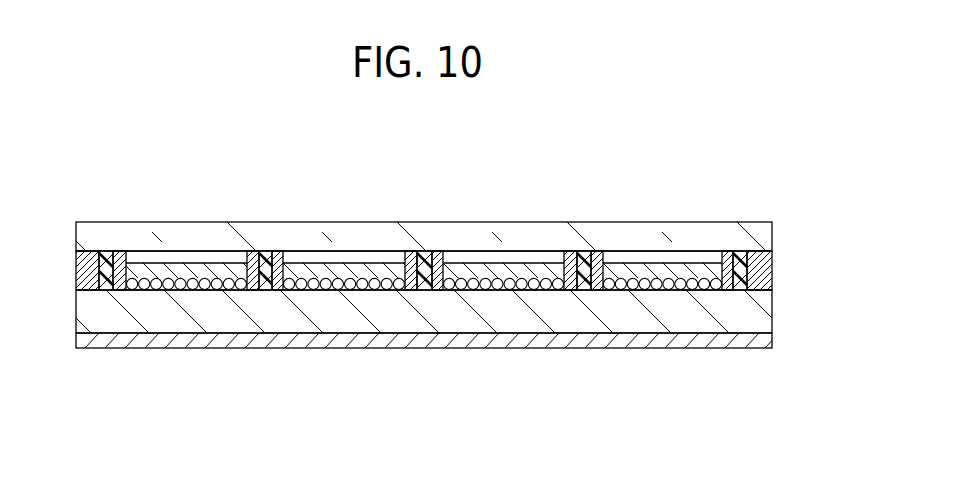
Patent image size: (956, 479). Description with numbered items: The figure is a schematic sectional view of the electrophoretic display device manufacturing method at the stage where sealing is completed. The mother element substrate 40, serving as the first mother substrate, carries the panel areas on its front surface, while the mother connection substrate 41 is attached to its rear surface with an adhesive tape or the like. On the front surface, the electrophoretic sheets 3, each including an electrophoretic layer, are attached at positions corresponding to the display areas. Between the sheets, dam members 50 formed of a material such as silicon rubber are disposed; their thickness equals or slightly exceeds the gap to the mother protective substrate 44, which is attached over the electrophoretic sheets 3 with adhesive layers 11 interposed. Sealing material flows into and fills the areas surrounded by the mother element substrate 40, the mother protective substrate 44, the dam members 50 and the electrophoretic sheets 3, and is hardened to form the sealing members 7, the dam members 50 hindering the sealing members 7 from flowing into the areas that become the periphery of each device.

The electrophoretic sheet 3 is at (377, 266).
The sealing member 7 is at (76, 272).
The adhesive layer 11 is at (323, 250).
The mother element substrate 40 is at (767, 302).
The mother connection substrate 41 is at (767, 342).
The mother protective substrate 44 is at (767, 236).
The dam member 50 is at (112, 250).